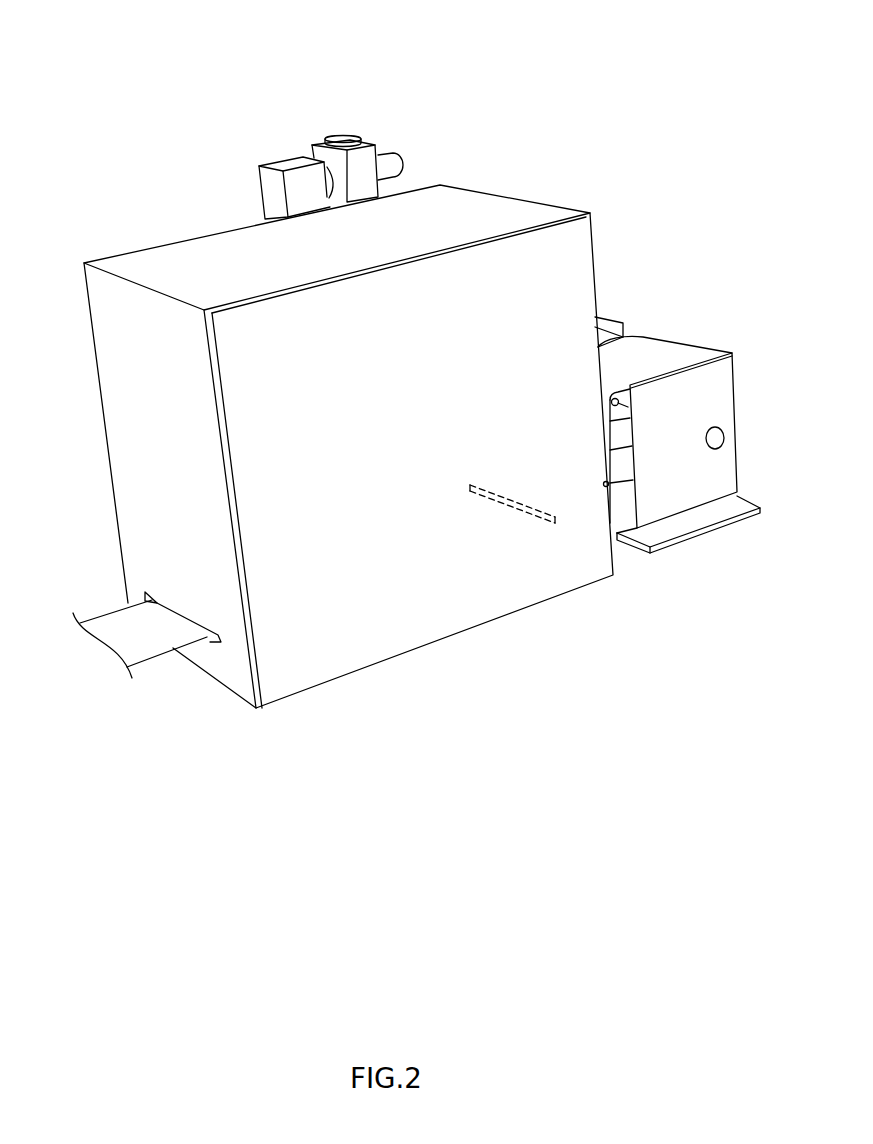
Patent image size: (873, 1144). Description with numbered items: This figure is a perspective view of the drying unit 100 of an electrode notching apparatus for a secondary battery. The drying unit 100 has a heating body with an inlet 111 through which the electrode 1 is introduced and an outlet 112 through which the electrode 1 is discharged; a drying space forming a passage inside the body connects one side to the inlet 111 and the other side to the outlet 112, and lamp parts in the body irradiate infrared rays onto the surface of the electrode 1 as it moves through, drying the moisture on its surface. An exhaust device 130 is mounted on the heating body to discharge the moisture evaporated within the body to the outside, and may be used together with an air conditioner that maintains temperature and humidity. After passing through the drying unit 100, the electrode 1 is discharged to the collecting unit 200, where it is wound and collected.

The drying unit 100 is at (532, 93).
The exhaust device 130 is at (290, 166).
The collecting unit 200 is at (687, 303).
The inlet 111 is at (208, 643).
The electrode 1 is at (156, 645).
The outlet 112 is at (547, 526).